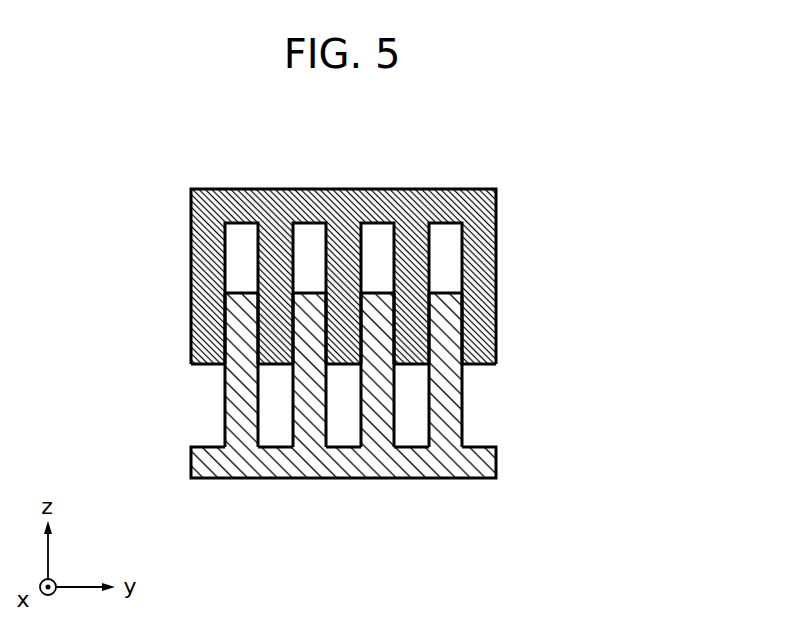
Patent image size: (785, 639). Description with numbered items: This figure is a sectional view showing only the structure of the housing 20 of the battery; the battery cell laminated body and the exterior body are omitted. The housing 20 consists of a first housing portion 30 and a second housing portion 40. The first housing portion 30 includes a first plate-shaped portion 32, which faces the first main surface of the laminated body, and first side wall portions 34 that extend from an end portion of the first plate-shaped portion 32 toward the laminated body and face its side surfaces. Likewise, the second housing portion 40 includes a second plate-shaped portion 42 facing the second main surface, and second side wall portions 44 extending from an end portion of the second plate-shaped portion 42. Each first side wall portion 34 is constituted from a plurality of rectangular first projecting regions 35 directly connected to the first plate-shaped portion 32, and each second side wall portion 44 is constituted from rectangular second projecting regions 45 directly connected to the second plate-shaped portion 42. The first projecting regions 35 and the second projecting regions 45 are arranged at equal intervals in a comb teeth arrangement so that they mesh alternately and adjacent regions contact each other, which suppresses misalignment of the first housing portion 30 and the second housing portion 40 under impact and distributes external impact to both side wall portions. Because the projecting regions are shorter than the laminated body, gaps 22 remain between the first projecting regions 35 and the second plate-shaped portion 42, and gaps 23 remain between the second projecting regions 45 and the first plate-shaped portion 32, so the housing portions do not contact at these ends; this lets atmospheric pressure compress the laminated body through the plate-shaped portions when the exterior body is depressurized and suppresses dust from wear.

The housing 20 is at (146, 150).
The gaps 22 is at (480, 428).
The gaps 23 is at (447, 240).
The first housing portion 30 is at (597, 165).
The first plate-shaped portion 32 is at (497, 193).
The first side wall portions 34 is at (510, 231).
The first projecting regions 35 is at (337, 268).
The second housing portion 40 is at (593, 387).
The second plate-shaped portion 42 is at (497, 458).
The second side wall portions 44 is at (498, 414).
The second projecting regions 45 is at (305, 400).